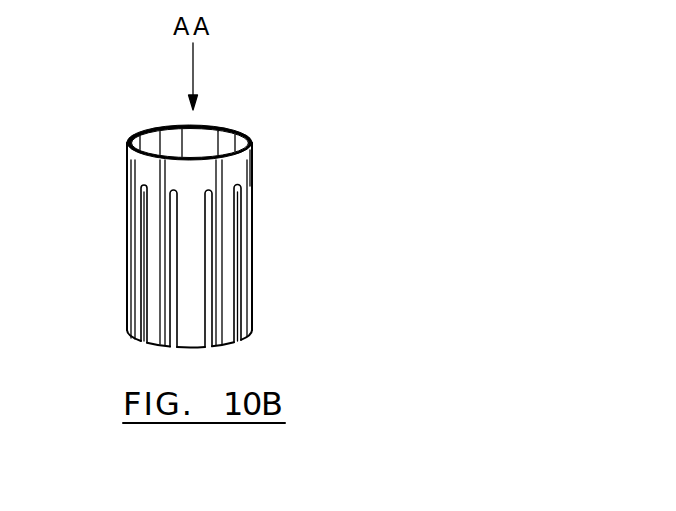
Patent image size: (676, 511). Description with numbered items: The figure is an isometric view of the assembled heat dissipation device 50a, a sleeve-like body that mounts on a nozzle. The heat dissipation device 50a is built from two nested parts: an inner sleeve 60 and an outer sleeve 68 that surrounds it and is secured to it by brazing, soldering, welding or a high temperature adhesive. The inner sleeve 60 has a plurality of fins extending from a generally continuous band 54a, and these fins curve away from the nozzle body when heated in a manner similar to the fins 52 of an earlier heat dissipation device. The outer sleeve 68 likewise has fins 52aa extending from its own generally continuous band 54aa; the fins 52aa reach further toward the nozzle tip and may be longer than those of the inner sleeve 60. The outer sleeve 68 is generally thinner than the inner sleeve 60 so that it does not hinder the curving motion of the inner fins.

The heat dissipation device 50a is at (277, 251).
The fins 52 is at (142, 252).
The fins 52aa is at (135, 330).
The generally continuous band 54a is at (240, 197).
The generally continuous band 54aa is at (245, 160).
The inner sleeve 60 is at (142, 198).
The outer sleeve 68 is at (135, 300).